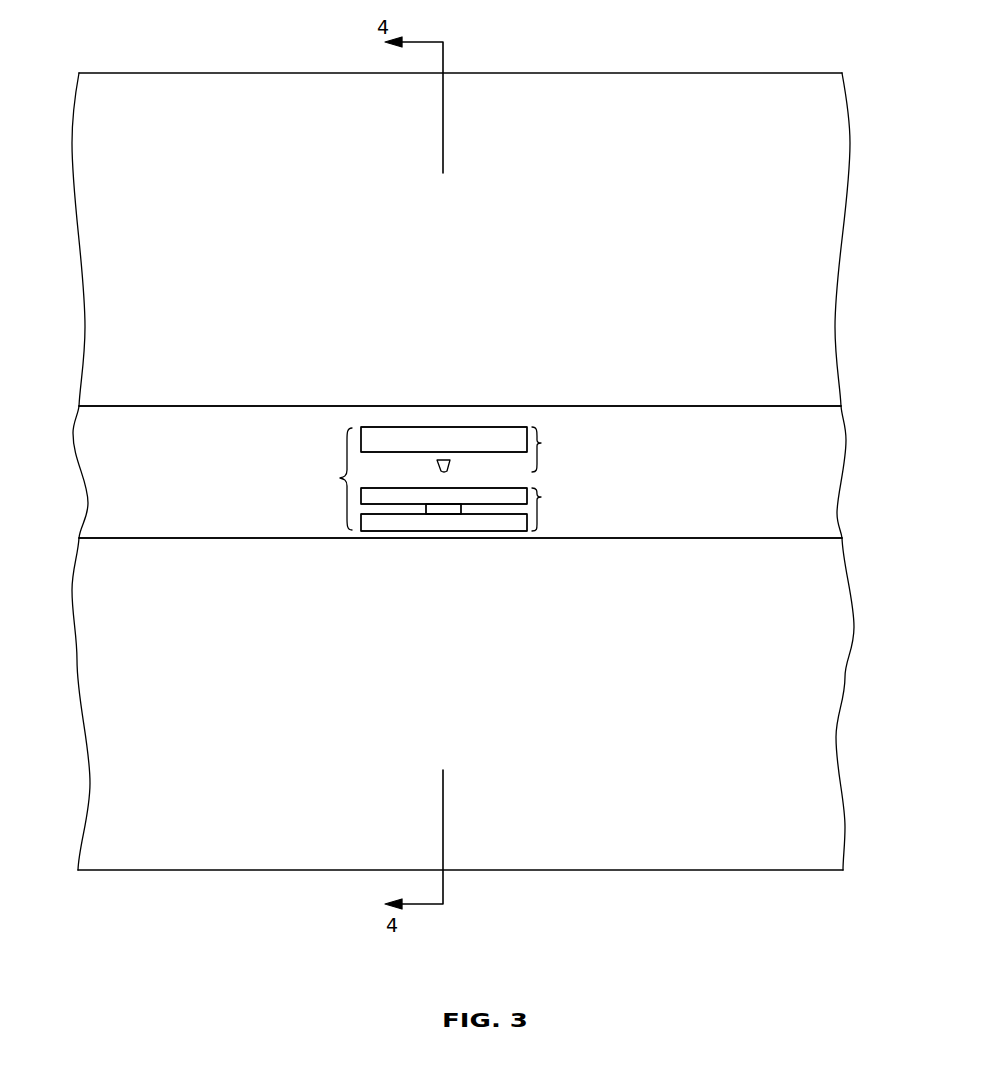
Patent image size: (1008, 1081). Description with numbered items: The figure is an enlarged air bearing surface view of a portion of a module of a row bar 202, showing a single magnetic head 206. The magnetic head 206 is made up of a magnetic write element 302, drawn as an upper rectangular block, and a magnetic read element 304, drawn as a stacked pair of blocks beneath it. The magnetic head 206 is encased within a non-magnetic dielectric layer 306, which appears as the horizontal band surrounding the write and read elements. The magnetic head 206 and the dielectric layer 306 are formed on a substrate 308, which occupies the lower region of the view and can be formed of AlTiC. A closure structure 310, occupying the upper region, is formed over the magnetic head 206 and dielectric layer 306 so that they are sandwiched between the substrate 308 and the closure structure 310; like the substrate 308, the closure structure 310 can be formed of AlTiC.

The row bar 202 is at (584, 62).
The magnetic head 206 is at (345, 438).
The magnetic write element 302 is at (543, 441).
The magnetic read element 304 is at (543, 496).
The non-magnetic dielectric layer 306 is at (745, 473).
The substrate 308 is at (502, 663).
The closure structure 310 is at (502, 241).